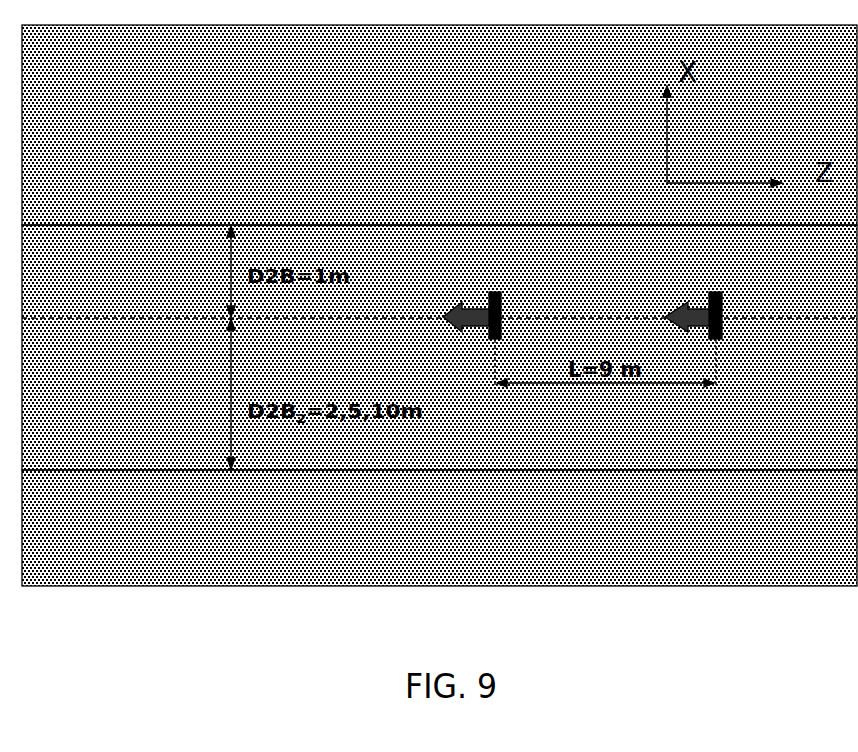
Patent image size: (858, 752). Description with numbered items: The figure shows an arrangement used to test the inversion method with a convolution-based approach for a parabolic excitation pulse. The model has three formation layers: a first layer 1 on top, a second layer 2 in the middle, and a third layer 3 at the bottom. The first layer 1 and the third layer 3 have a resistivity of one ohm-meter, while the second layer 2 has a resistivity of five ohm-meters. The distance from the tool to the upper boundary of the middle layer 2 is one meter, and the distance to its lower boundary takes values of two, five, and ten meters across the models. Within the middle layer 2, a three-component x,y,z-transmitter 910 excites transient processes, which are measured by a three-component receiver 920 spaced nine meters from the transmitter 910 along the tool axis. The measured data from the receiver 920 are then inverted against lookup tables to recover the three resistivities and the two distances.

The three-component x,y,z-transmitter 910 is at (724, 303).
The three-component receiver 920 is at (506, 302).
The first formation layer (R1) 1 is at (439, 125).
The second formation layer (R2) 2 is at (439, 347).
The third formation layer (R3) 3 is at (439, 528).